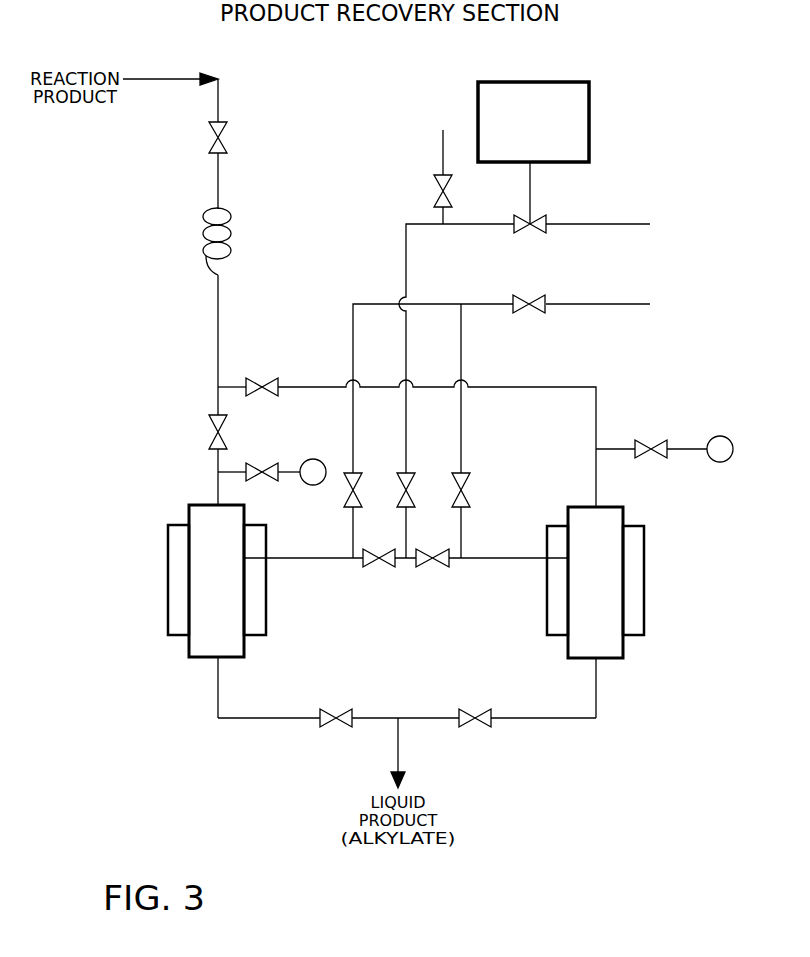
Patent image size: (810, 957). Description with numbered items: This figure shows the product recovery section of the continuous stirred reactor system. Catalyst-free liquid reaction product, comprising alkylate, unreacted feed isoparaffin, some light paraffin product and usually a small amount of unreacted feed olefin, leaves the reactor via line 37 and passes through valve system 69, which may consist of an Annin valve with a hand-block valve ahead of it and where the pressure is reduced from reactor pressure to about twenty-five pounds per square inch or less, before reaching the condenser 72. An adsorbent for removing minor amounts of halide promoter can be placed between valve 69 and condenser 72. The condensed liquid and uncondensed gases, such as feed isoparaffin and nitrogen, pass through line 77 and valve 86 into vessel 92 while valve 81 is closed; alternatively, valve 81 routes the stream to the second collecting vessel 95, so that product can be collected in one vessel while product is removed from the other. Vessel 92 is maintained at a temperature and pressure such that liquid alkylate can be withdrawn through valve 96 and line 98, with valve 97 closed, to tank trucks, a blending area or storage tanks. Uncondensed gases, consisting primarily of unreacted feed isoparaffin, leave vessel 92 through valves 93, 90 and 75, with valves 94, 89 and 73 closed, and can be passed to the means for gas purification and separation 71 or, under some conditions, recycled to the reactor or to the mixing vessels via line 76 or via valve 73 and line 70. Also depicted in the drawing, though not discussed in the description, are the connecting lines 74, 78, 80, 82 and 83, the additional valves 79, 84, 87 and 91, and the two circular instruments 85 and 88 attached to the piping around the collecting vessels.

The line 37 is at (167, 74).
The valve system 69 is at (231, 144).
The line 70 is at (440, 149).
The means for gas purification and separation 71 is at (591, 130).
The condenser 72 is at (234, 229).
The valve 73 is at (436, 200).
The line 74 is at (533, 195).
The valve 75 is at (521, 230).
The line 76 is at (594, 224).
The line 77 is at (221, 318).
The line 78 is at (406, 263).
The valve 79 is at (523, 313).
The line 80 is at (591, 304).
The valve 81 is at (257, 378).
The line 82 is at (352, 335).
The line 83 is at (482, 387).
The valve 84 is at (643, 441).
The pressure gauge 85 is at (724, 437).
The valve 86 is at (209, 437).
The valve 87 is at (253, 464).
The pressure gauge 88 is at (311, 460).
The valve 89 is at (358, 497).
The valve 90 is at (411, 498).
The valve 91 is at (466, 485).
The vessel 92 is at (188, 509).
The valve 93 is at (386, 563).
The valve 94 is at (427, 563).
The vessel 95 is at (625, 518).
The valve 96 is at (331, 711).
The valve 97 is at (470, 712).
The line 98 is at (402, 742).